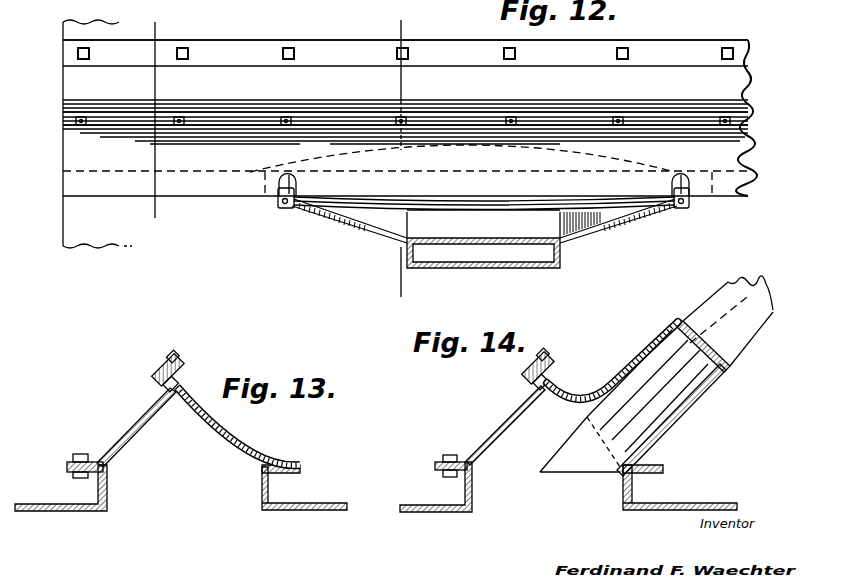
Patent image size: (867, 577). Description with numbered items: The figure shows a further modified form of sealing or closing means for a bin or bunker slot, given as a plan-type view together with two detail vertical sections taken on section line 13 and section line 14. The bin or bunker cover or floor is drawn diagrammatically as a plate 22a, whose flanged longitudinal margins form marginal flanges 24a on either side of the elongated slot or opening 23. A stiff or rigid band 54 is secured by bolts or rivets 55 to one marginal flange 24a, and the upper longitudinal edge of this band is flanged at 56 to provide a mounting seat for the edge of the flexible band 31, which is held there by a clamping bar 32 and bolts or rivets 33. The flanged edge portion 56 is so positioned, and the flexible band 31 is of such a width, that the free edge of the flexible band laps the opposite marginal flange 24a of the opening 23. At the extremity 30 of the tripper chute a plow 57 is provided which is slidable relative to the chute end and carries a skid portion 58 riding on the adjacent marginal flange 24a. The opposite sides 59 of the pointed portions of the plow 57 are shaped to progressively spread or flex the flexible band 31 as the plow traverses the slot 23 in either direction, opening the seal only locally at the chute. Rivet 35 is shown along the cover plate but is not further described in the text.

In FIG. 12, the section line 13- 13 is at (142, 29).
In FIG. 12, the section line 14- 14 is at (383, 30).
In FIG. 12, the floor or cover plate 22a is at (405, 20).
In FIG. 13, the floor or cover plate 22a is at (30, 512).
In FIG. 14, the floor or cover plate 22a is at (415, 510).
In FIG. 13, the slot or opening 23 is at (189, 492).
In FIG. 14, the slot or opening 23 is at (547, 492).
In FIG. 13, the marginal flange 24a is at (68, 470).
In FIG. 14, the marginal flange 24a is at (437, 468).
In FIG. 12, the extremity of the tripper chute 30 is at (562, 270).
In FIG. 14, the extremity of the tripper chute 30 is at (548, 465).
In FIG. 12, the flexible band 31 is at (243, 160).
In FIG. 13, the flexible band 31 is at (222, 428).
In FIG. 14, the flexible band 31 is at (612, 383).
In FIG. 12, the clamping bar 32 is at (130, 118).
In FIG. 13, the clamping bar 32 is at (160, 355).
In FIG. 14, the clamping bar 32 is at (535, 352).
In FIG. 12, the bolts or rivets 33 is at (188, 122).
In FIG. 13, the bolts or rivets 33 is at (188, 362).
In FIG. 14, the bolts or rivets 33 is at (552, 362).
In FIG. 12, the rivet 35 is at (287, 46).
In FIG. 12, the stiff or rigid band 54 is at (207, 85).
In FIG. 13, the stiff or rigid band 54 is at (133, 428).
In FIG. 14, the stiff or rigid band 54 is at (505, 437).
In FIG. 13, the bolts or rivets 55 is at (80, 455).
In FIG. 14, the bolts or rivets 55 is at (452, 455).
In FIG. 12, the flanged edge portion 56 is at (125, 100).
In FIG. 13, the flanged edge portion 56 is at (150, 365).
In FIG. 14, the flanged edge portion 56 is at (525, 378).
In FIG. 12, the plow 57 is at (586, 247).
In FIG. 14, the plow 57 is at (702, 401).
In FIG. 14, the skid portion 58 is at (668, 455).
In FIG. 12, the opposite sides of the plow 59 is at (365, 213).